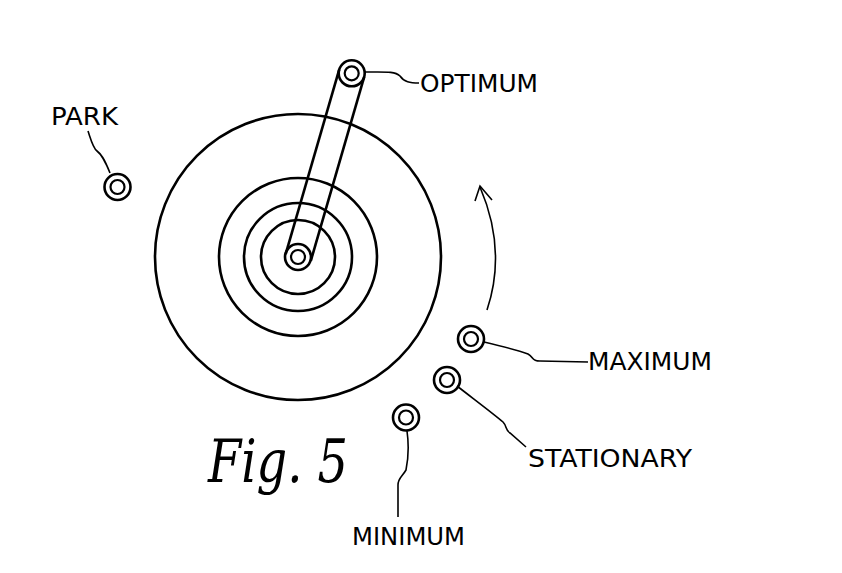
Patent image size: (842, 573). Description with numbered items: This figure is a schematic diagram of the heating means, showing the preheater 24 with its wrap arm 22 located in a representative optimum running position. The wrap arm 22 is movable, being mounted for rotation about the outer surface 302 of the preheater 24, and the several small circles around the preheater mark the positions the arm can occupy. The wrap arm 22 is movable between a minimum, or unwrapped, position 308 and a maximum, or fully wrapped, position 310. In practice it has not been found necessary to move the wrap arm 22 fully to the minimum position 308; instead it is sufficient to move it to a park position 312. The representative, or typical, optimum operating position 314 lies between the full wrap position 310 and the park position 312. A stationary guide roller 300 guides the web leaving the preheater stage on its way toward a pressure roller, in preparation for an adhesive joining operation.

The wrap arm 22 is at (363, 65).
The preheater 24 is at (185, 344).
The outer surface 302 is at (410, 166).
The optimum operating position 314 is at (340, 64).
The park position 312 is at (110, 201).
The maximum position 310 is at (484, 336).
The stationary guide roller 300 is at (461, 378).
The minimum position 308 is at (417, 424).